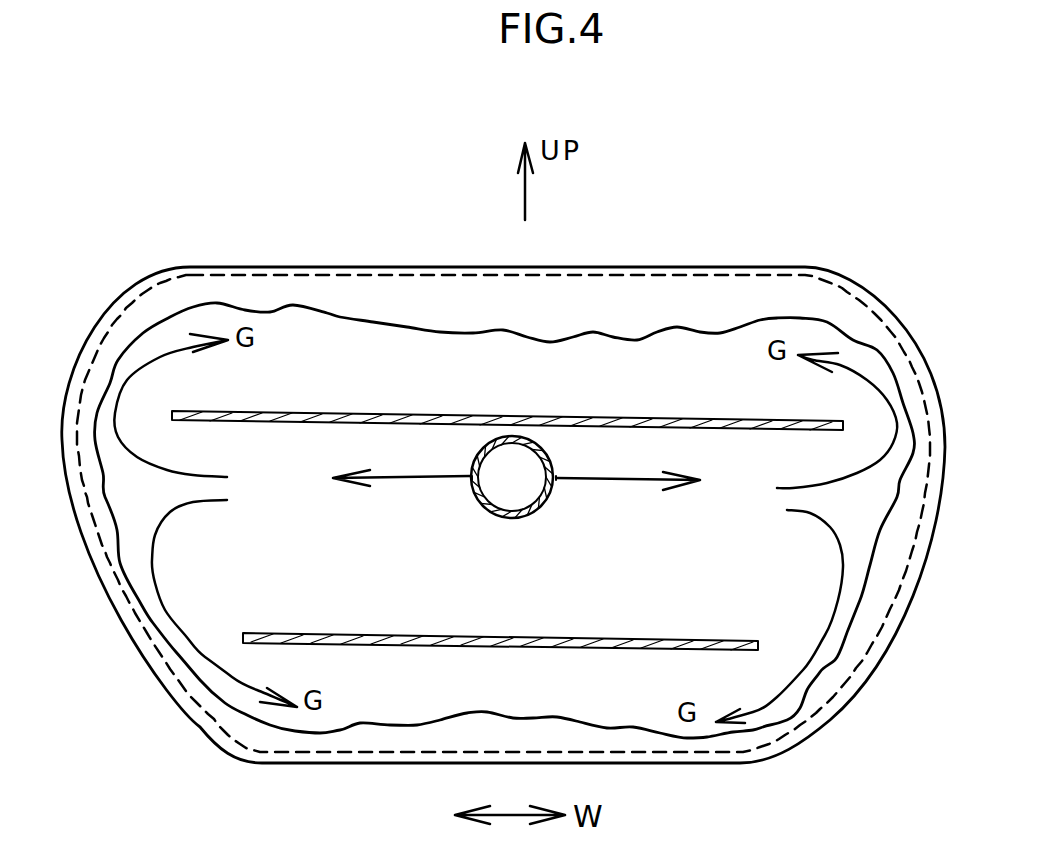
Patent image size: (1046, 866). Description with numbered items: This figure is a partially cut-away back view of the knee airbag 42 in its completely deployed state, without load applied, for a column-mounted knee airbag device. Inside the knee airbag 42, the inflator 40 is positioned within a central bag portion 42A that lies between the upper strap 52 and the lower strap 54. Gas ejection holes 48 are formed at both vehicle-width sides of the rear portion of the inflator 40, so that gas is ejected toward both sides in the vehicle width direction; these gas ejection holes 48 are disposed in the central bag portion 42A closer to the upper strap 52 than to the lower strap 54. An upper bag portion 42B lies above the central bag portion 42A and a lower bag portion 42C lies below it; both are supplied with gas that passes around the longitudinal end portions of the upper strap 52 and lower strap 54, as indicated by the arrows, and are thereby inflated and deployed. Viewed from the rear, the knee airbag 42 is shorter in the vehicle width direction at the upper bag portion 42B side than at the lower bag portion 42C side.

The inflator 40 is at (520, 531).
The knee airbag 42 is at (725, 257).
The central bag portion 42A is at (630, 604).
The upper bag portion 42B is at (660, 389).
The lower bag portion 42C is at (617, 703).
The gas ejection holes 48 is at (472, 478).
The upper strap 52 is at (435, 412).
The lower strap 54 is at (425, 650).